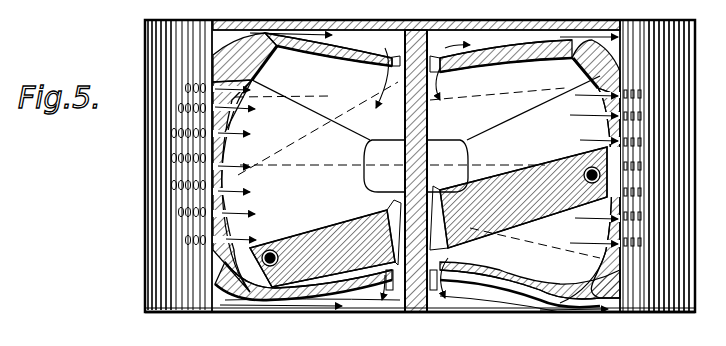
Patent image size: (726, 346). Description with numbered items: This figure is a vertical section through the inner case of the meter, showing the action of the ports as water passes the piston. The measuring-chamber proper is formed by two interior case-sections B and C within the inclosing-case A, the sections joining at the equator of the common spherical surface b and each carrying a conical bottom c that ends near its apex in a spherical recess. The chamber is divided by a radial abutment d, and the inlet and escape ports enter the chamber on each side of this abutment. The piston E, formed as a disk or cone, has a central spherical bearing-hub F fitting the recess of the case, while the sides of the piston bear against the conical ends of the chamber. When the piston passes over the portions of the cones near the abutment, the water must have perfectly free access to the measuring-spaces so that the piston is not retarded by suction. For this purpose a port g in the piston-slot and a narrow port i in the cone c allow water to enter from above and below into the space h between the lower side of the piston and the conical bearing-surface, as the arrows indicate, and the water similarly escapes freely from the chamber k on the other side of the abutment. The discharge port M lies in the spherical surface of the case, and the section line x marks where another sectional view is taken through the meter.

The inclosing-case A is at (416, 25).
The interior case-section B is at (200, 90).
The interior case-section C is at (211, 283).
The radial abutment d is at (416, 171).
The conical bottom c is at (416, 170).
The spherical surface b is at (416, 174).
The discharge port M is at (248, 106).
The spherical bearing-hub F is at (426, 134).
The piston E is at (540, 116).
The side passage g is at (417, 225).
The narrow port i is at (413, 168).
The chamber k is at (519, 241).
The section line x is at (465, 50).
The space h is at (380, 268).